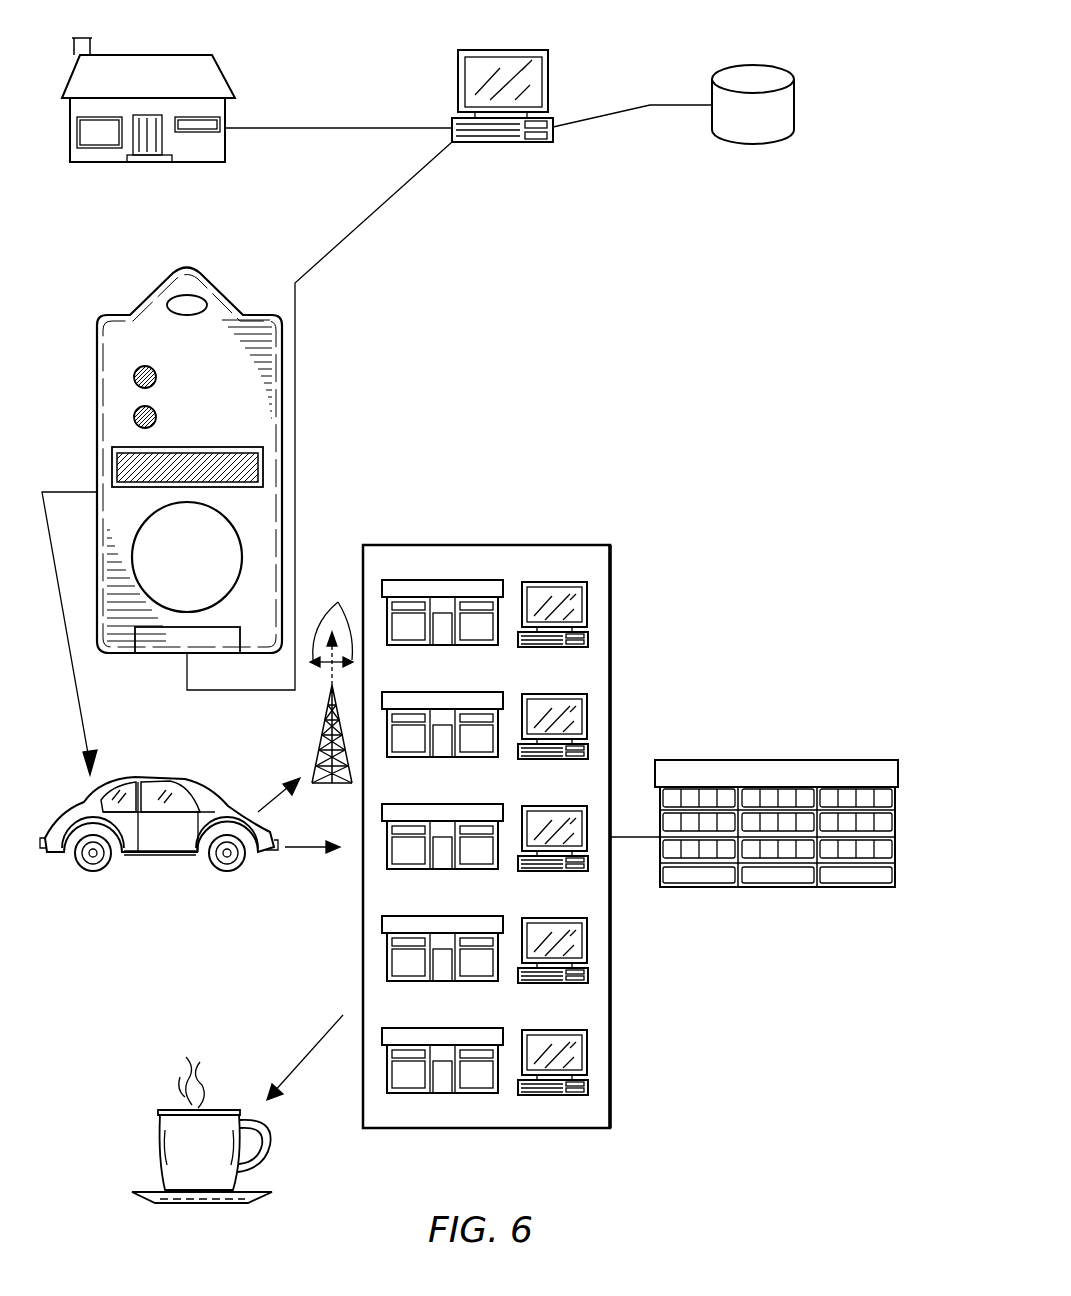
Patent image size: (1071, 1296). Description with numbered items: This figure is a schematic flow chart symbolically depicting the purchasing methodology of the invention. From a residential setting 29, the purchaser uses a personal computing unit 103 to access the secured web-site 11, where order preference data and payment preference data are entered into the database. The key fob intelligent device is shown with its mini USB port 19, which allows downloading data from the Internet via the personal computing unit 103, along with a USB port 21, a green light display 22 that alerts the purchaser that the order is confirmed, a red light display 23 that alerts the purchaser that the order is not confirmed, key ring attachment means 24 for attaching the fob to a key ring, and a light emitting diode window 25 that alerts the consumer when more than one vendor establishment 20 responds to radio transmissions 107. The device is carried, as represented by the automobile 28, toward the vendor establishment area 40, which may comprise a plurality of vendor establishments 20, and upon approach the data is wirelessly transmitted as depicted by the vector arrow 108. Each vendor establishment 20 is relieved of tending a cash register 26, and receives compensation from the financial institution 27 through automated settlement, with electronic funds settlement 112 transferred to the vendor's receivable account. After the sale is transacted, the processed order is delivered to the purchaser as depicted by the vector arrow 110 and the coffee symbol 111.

The secured web-site 11 is at (757, 63).
The mini USB port 19 is at (183, 657).
The vendor establishment 20 is at (482, 580).
The USB port 21 is at (237, 527).
The green light display 22 is at (138, 367).
The red light display 23 is at (138, 407).
The key ring attachment means 24 is at (183, 305).
The light emitting diode window 25 is at (260, 470).
The cash register 26 is at (585, 608).
The financial institution 27 is at (777, 760).
The automobile 28 is at (157, 857).
The residential setting 29 is at (147, 55).
The vendor establishment area 40 is at (610, 545).
The personal computing unit 103 is at (500, 50).
The radio transmission 107 is at (340, 678).
The vector arrow 108 is at (305, 848).
The vector arrow 110 is at (303, 1057).
The coffee symbol 111 is at (157, 1138).
The electronic funds settlement 112 is at (633, 842).